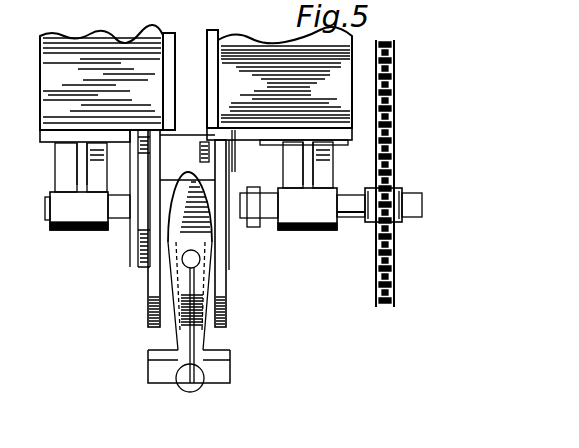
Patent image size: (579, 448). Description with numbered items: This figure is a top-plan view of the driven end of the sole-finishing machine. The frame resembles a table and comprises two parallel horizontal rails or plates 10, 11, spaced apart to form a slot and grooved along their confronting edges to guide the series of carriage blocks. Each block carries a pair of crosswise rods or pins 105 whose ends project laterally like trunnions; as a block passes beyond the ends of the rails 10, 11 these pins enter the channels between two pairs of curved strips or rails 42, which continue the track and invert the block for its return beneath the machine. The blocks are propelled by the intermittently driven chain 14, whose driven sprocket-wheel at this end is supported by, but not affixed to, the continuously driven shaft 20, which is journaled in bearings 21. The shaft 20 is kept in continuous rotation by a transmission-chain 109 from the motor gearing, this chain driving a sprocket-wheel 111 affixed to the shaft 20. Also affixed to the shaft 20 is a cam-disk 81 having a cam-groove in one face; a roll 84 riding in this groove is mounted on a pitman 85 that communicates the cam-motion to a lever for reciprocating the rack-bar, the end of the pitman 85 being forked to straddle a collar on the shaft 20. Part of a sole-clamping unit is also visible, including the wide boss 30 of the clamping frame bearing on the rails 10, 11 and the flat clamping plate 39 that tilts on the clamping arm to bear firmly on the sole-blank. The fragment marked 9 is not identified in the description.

The engine (partial) 9 is at (4, 290).
The rail 10 is at (350, 70).
The rail 11 is at (42, 58).
The chain 14 is at (220, 263).
The shaft 20 is at (418, 196).
The bearings 21 is at (67, 197).
The boss 30 is at (218, 367).
The clamping plate 39 is at (222, 181).
The curved strips or rails 42 is at (150, 288).
The cam-disk 81 is at (143, 262).
The roll 84 is at (142, 166).
The pitman 85 is at (132, 172).
The rods or pins 105 is at (218, 245).
The transmission-chain 109 is at (393, 127).
The sprocket-wheel 111 is at (397, 230).